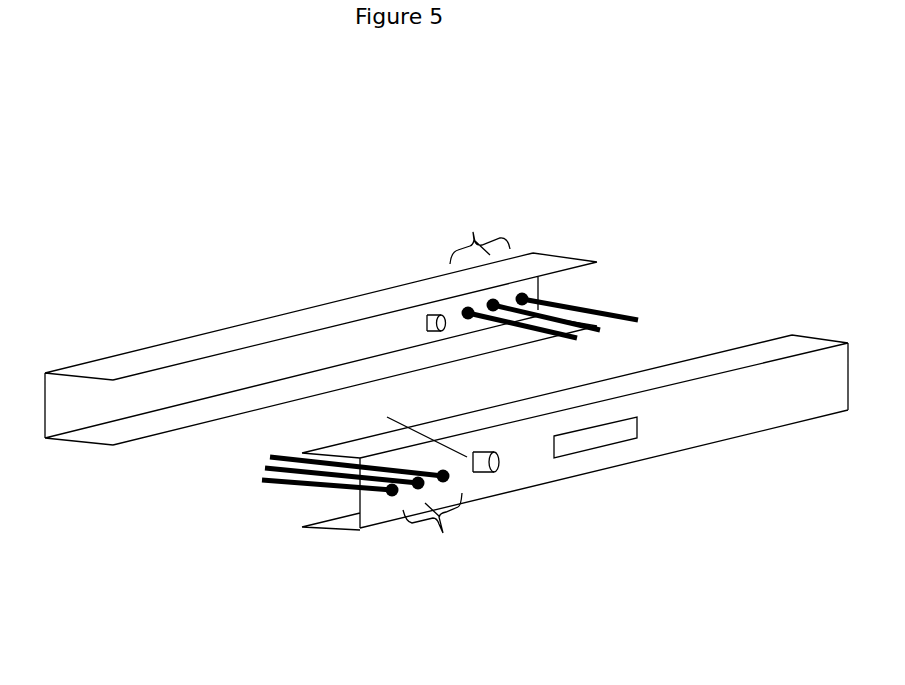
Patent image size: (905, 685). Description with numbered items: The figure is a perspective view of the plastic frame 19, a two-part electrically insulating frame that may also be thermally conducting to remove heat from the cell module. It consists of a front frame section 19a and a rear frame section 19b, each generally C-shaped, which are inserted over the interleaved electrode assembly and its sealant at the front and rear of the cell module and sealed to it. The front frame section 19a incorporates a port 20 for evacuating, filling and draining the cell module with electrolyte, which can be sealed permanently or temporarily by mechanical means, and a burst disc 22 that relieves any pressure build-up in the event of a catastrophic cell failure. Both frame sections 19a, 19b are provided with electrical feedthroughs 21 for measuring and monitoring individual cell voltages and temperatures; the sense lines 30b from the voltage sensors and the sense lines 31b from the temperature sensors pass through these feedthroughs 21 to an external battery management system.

The plastic frame 19 is at (763, 258).
The front frame section 19a is at (330, 530).
The rear frame section 19b is at (95, 440).
The port 20 is at (422, 313).
The electrical feedthroughs 21 is at (456, 391).
The burst disc 22 is at (595, 448).
The sense lines 30b is at (610, 312).
The sense lines 31b is at (588, 333).